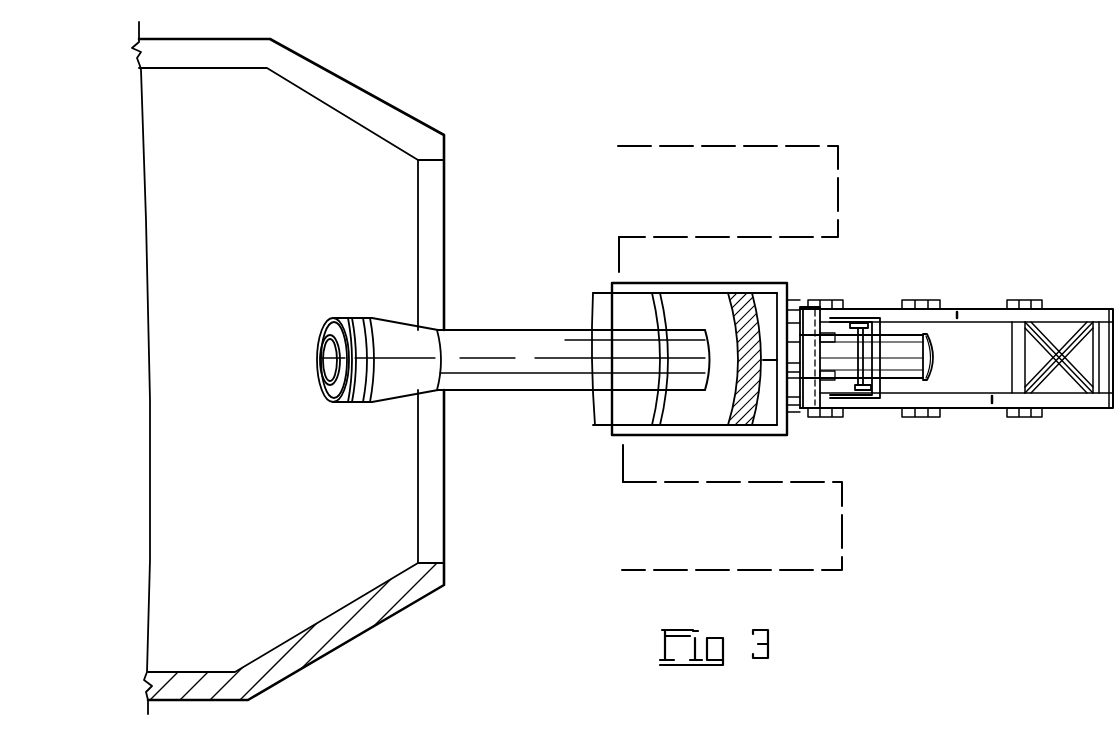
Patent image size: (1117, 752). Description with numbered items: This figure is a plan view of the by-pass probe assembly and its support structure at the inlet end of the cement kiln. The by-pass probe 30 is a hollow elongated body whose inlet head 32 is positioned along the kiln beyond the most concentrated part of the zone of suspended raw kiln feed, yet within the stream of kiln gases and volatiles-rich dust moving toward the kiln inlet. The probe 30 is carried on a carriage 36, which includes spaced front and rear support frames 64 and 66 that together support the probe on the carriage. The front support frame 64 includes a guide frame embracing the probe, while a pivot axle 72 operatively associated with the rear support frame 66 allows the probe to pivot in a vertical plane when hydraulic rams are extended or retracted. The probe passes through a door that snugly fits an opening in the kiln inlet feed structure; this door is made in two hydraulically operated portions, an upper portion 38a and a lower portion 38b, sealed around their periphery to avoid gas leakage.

The by-pass probe 30 is at (505, 397).
The inlet head 32 is at (392, 402).
The carriage 36 is at (980, 310).
The upper portion of door 38a is at (688, 418).
The lower portion of door 38b is at (618, 418).
The front support frame 64 is at (808, 310).
The rear support frame 66 is at (877, 312).
The pivot axle 72 is at (852, 390).